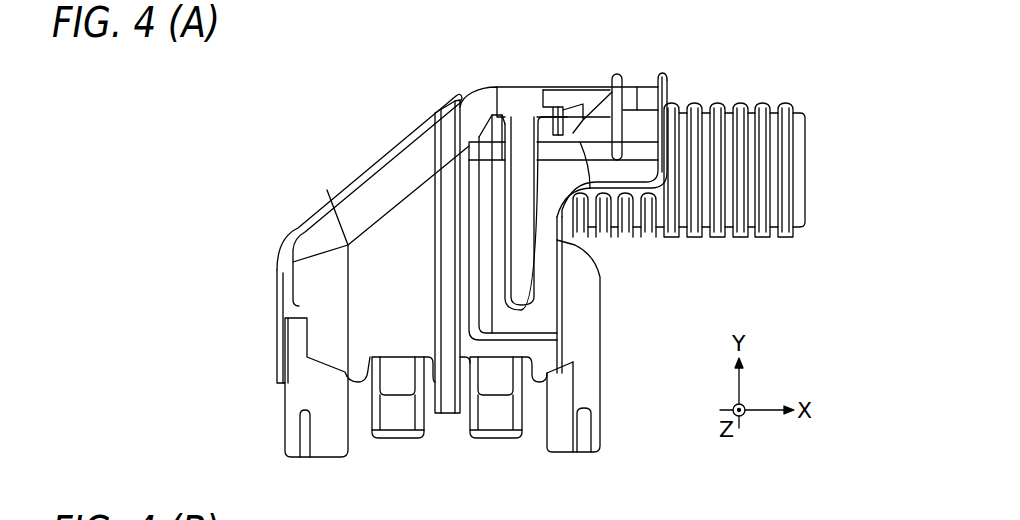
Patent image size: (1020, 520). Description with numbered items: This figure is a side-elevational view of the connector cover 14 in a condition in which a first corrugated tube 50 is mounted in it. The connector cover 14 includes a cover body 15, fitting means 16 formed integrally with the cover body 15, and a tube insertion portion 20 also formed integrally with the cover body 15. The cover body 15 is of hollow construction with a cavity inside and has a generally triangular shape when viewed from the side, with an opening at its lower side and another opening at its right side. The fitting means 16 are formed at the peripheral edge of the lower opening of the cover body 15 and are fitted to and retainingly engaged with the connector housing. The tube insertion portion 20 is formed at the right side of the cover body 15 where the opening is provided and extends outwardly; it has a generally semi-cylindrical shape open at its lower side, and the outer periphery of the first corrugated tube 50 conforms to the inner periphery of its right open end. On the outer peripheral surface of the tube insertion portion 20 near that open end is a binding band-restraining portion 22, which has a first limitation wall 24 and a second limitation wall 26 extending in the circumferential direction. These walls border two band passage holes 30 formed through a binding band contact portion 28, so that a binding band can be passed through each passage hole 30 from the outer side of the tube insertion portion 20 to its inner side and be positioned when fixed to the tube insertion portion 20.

The connector cover 14 is at (333, 203).
The cover body 15 is at (327, 303).
The fitting means 16 is at (563, 438).
The tube insertion portion 20 is at (590, 235).
The binding band-restraining portion 22 is at (645, 84).
The first limitation wall 24 is at (672, 97).
The second limitation wall 26 is at (611, 82).
The binding band contact portion 28 is at (636, 86).
The band passage hole 30 is at (628, 123).
The first corrugated tube 50 is at (793, 228).